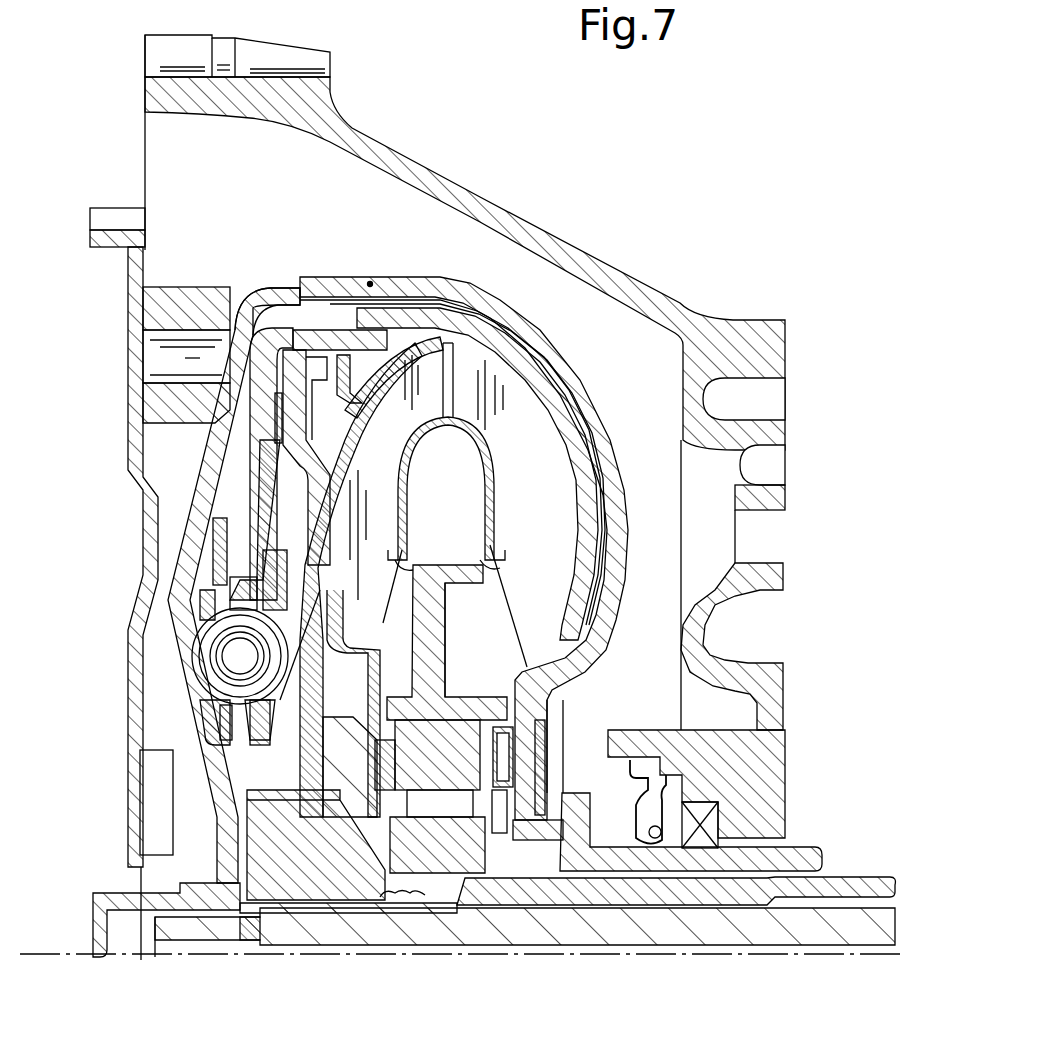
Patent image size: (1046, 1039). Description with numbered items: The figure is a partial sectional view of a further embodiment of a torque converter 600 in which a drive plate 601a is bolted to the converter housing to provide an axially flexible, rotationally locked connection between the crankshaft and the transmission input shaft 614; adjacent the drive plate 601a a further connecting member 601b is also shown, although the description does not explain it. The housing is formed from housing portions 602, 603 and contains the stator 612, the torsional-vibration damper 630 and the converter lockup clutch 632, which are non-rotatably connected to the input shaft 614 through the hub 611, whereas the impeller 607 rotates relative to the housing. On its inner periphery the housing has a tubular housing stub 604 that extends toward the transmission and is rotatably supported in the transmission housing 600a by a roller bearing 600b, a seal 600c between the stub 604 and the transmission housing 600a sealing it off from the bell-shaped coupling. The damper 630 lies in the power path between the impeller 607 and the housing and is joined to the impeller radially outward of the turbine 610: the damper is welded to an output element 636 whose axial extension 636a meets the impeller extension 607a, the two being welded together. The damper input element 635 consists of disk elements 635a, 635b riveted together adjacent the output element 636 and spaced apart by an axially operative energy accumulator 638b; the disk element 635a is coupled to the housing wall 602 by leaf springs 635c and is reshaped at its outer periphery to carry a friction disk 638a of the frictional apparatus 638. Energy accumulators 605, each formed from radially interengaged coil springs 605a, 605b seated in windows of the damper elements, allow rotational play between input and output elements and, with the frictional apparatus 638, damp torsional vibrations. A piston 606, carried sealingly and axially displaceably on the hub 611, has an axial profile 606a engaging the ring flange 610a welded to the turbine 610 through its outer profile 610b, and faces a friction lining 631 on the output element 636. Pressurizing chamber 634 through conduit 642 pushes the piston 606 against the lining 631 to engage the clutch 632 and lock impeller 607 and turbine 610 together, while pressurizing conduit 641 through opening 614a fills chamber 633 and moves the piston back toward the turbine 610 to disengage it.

The torque converter 600 is at (603, 197).
The transmission housing 600a is at (770, 363).
The roller bearing 600b is at (703, 808).
The seal 600c is at (641, 820).
The drive plate 601a is at (136, 463).
The housing flange 601b is at (174, 305).
The housing portion 602 is at (163, 643).
The housing portion 603 is at (582, 408).
The housing stub 604 is at (733, 860).
The energy accumulator 605 is at (443, 633).
The coil spring 605a is at (273, 655).
The coil spring 605b is at (410, 645).
The piston 606 is at (300, 525).
The axial profile 606a is at (370, 283).
The impeller 607 is at (522, 377).
The extension 607a is at (395, 345).
The turbine 610 is at (447, 336).
The ring flange 610a is at (451, 338).
The outer profile 610b is at (362, 333).
The hub 611 is at (305, 855).
The stator 612 is at (465, 750).
The input shaft 614 is at (573, 930).
The opening 614a is at (243, 935).
The torsional-vibration damper 630 is at (216, 704).
The friction lining 631 is at (276, 333).
The converter lockup clutch 632 is at (242, 415).
The chamber 633 is at (240, 493).
The chamber 634 is at (330, 423).
The input element 635 is at (186, 597).
The disk element 635a is at (207, 577).
The disk element 635b is at (240, 585).
The leaf springs 635c is at (280, 533).
The output element 636 is at (262, 395).
The extension 636a is at (313, 333).
The frictional apparatus 638 is at (330, 862).
The friction disk 638a is at (262, 792).
The axially operative energy accumulator 638b is at (283, 855).
The conduit 641 is at (782, 956).
The conduit 642 is at (782, 900).